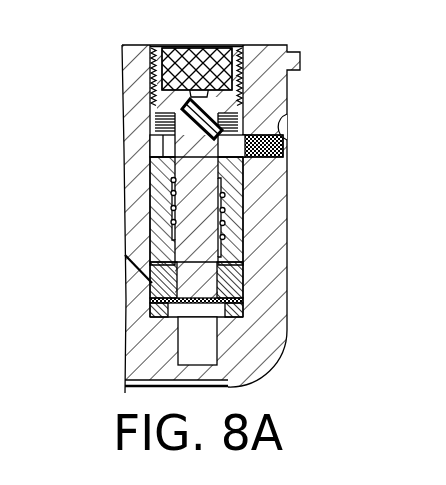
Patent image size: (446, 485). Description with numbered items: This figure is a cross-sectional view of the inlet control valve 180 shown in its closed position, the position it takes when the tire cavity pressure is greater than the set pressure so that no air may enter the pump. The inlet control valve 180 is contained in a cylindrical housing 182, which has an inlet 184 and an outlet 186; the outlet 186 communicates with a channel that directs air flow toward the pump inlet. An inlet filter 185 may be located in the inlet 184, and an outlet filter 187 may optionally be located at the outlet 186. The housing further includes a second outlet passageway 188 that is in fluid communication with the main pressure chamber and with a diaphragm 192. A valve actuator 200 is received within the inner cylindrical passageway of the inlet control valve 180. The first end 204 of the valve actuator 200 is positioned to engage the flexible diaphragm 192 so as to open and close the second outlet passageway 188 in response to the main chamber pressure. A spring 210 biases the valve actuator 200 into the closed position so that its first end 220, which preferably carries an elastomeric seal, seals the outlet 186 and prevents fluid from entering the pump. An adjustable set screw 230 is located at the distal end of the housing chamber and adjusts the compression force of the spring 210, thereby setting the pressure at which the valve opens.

The inlet control valve 180 is at (307, 266).
The cylindrical housing 182 is at (240, 222).
The inlet 184 is at (283, 146).
The inlet filter 185 is at (284, 123).
The outlet 186 is at (203, 45).
The outlet filter 187 is at (233, 68).
The second outlet passageway 188 is at (194, 312).
The diaphragm 192 is at (205, 289).
The valve actuator 200 is at (172, 184).
The first end 204 is at (190, 279).
The spring 210 is at (172, 206).
The first end 220 is at (178, 108).
The adjustable set screw 230 is at (244, 97).